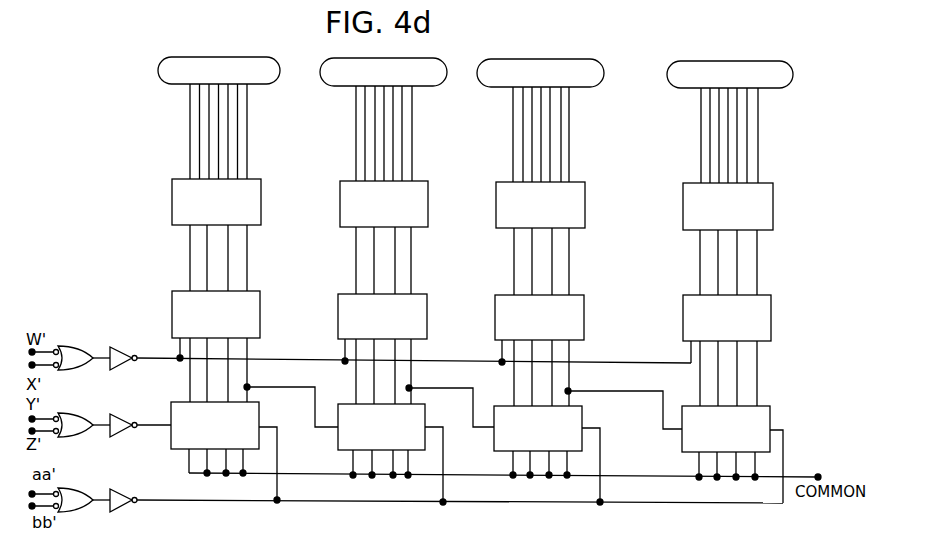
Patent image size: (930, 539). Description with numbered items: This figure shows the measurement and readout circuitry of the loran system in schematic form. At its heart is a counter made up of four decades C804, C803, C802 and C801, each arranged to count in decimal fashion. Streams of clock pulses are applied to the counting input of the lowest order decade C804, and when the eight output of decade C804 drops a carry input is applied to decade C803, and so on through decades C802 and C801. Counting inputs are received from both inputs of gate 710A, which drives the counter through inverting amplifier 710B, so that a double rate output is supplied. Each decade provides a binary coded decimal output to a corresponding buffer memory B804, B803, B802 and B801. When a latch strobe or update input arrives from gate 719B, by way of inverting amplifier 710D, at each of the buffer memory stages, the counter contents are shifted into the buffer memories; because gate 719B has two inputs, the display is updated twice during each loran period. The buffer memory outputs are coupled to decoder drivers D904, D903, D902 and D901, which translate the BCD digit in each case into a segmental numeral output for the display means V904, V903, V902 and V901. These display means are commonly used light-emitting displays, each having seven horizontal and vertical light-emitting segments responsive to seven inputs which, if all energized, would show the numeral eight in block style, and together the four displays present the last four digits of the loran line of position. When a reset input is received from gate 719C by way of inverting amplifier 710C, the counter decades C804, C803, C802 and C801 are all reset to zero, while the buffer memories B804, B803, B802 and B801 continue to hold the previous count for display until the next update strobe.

The display means V904 is at (280, 68).
The display means V903 is at (447, 70).
The display means V902 is at (604, 71).
The display means V901 is at (793, 73).
The decoder driver D904 is at (261, 208).
The decoder driver D903 is at (428, 210).
The decoder driver D902 is at (585, 211).
The decoder driver D901 is at (773, 213).
The buffer memory B804 is at (260, 322).
The buffer memory B803 is at (427, 324).
The buffer memory B802 is at (584, 325).
The buffer memory B801 is at (771, 326).
The counter decade C804 is at (277, 396).
The counter decade C803 is at (338, 448).
The counter decade C802 is at (600, 399).
The counter decade C801 is at (788, 400).
The gate 719B is at (72, 344).
The inverting amplifier 710D is at (118, 347).
The gate 710A is at (80, 411).
The inverting amplifier 710B is at (118, 414).
The gate 719C is at (82, 512).
The inverting amplifier 710C is at (123, 507).